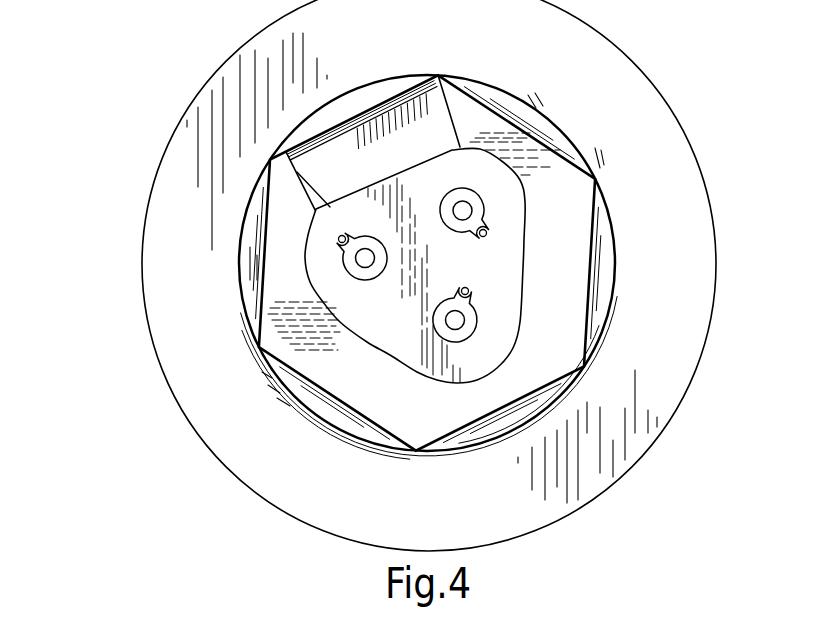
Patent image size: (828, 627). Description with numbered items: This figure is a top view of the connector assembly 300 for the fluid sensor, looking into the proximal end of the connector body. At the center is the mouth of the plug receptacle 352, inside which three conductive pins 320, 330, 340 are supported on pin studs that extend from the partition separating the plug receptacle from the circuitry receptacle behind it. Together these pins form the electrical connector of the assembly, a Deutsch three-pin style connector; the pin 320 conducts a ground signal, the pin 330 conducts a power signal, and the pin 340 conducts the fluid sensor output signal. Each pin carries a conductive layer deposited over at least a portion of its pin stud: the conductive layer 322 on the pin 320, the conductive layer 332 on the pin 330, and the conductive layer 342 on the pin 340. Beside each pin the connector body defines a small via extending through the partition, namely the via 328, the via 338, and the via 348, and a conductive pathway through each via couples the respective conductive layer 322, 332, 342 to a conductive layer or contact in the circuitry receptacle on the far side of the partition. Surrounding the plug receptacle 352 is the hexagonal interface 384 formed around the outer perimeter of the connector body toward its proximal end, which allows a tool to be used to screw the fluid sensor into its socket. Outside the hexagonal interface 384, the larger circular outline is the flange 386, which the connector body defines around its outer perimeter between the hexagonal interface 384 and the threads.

The connector assembly 300 is at (110, 103).
The conductive pin 320 is at (356, 302).
The conductive layer 322 is at (282, 303).
The via 328 is at (336, 241).
The conductive pin 330 is at (569, 186).
The conductive layer 332 is at (478, 221).
The via 338 is at (490, 232).
The conductive pin 340 is at (529, 401).
The conductive layer 342 is at (466, 333).
The via 348 is at (470, 288).
The plug receptacle 352 is at (481, 274).
The hexagonal interface 384 is at (362, 86).
The flange 386 is at (590, 72).